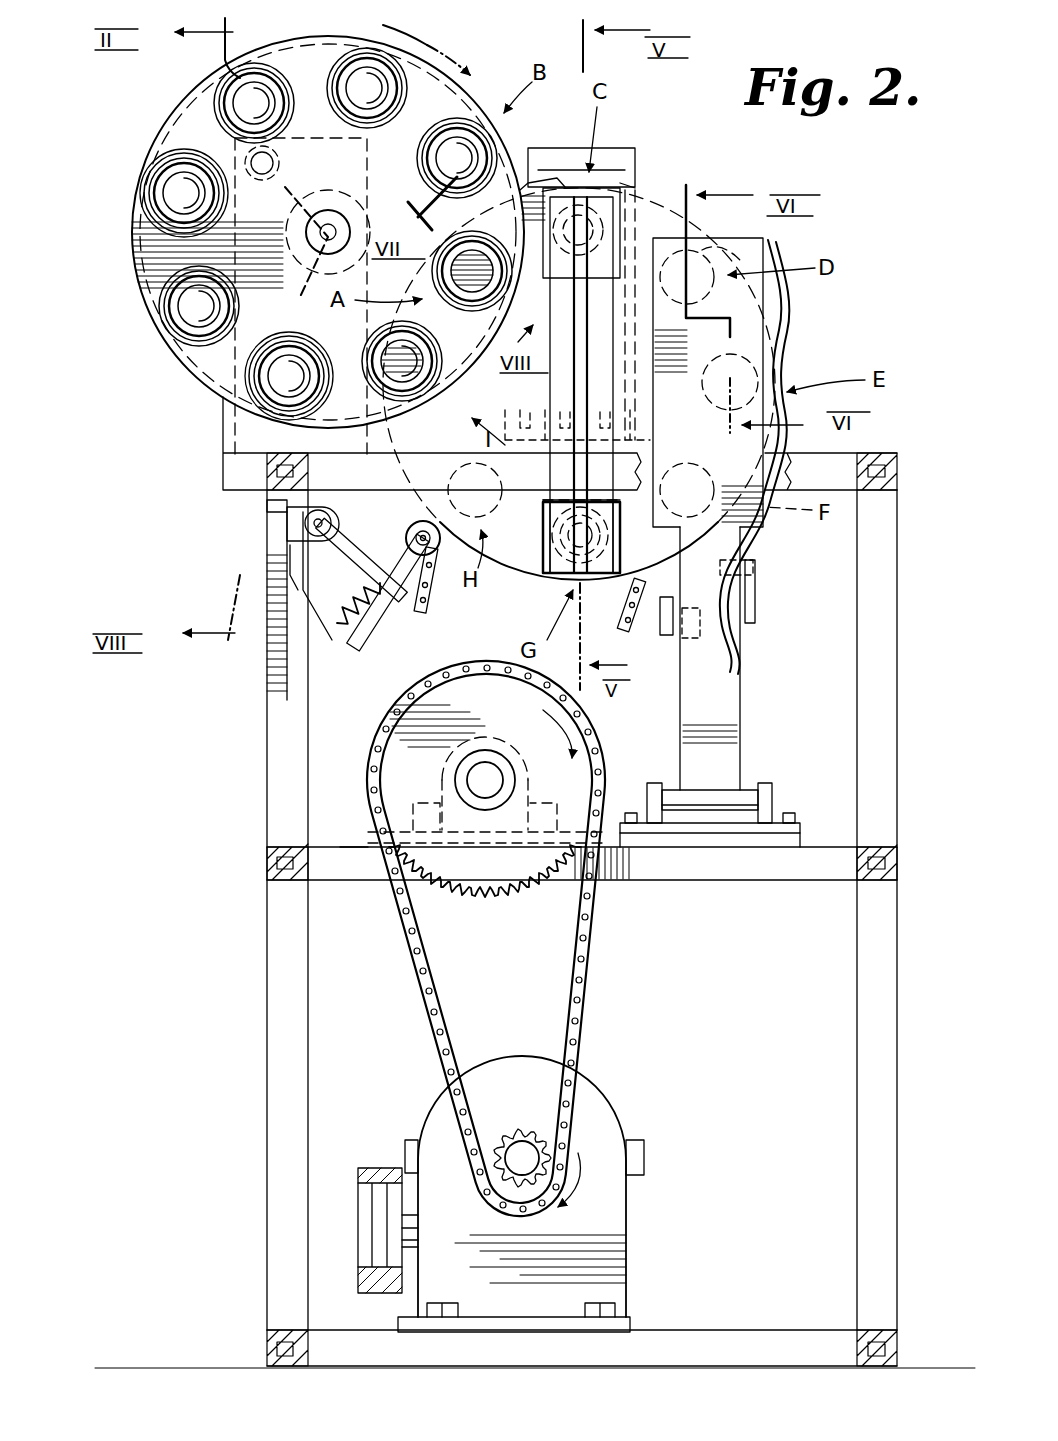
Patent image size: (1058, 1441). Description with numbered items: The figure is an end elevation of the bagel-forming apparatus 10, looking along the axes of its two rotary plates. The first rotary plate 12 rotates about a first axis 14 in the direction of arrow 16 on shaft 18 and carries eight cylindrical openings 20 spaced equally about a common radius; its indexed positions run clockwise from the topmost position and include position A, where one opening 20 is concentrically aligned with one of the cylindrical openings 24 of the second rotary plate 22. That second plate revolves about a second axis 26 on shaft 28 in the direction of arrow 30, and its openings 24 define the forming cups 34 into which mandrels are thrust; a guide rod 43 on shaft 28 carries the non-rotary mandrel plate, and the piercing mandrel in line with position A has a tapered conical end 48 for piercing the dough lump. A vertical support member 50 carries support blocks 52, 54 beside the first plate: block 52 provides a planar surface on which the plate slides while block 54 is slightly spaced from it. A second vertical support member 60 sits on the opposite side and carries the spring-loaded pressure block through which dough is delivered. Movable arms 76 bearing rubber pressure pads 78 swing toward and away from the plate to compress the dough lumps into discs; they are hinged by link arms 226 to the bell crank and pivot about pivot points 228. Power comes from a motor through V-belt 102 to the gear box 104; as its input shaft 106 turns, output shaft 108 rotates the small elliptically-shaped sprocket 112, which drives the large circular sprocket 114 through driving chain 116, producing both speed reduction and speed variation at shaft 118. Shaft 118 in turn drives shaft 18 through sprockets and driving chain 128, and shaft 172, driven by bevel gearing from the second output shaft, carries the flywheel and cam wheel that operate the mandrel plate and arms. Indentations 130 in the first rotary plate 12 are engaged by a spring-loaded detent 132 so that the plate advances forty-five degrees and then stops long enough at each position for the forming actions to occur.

The bagel-forming apparatus 10 is at (252, 727).
The first rotary plate 12 is at (700, 228).
The first axis 14 is at (582, 382).
The arrow 16 is at (790, 313).
The shaft 18 is at (582, 372).
The cylindrical openings 20 is at (672, 253).
The second rotary plate 22 is at (197, 122).
The cylindrical openings 24 is at (480, 147).
The second axis 26 is at (320, 243).
The shaft 28 is at (332, 212).
The arrow 30 is at (445, 38).
The forming cups 34 is at (163, 165).
The guide rod 43 is at (266, 180).
The tapered conical end 48 is at (478, 288).
The vertical support member 50 is at (587, 325).
The support block 52 is at (607, 193).
The support block 54 is at (543, 562).
The second vertical support member 60 is at (620, 160).
The movable arms 76 is at (727, 643).
The rubber pressure pad 78 is at (717, 252).
The V-belt 102 is at (405, 1175).
The gear box 104 is at (602, 1085).
The input shaft 106 is at (410, 1233).
The output shaft 108 is at (524, 1157).
The elliptically-shaped sprocket 112 is at (513, 1122).
The circular sprocket 114 is at (499, 857).
The driving chain 116 is at (592, 950).
The shaft 118 is at (485, 786).
The driving chain 128 is at (417, 614).
The indentations 130 is at (420, 513).
The spring-loaded detent 132 is at (338, 561).
The shaft 172 is at (404, 1145).
The link arms 226 is at (667, 640).
The pivot points 228 is at (777, 805).